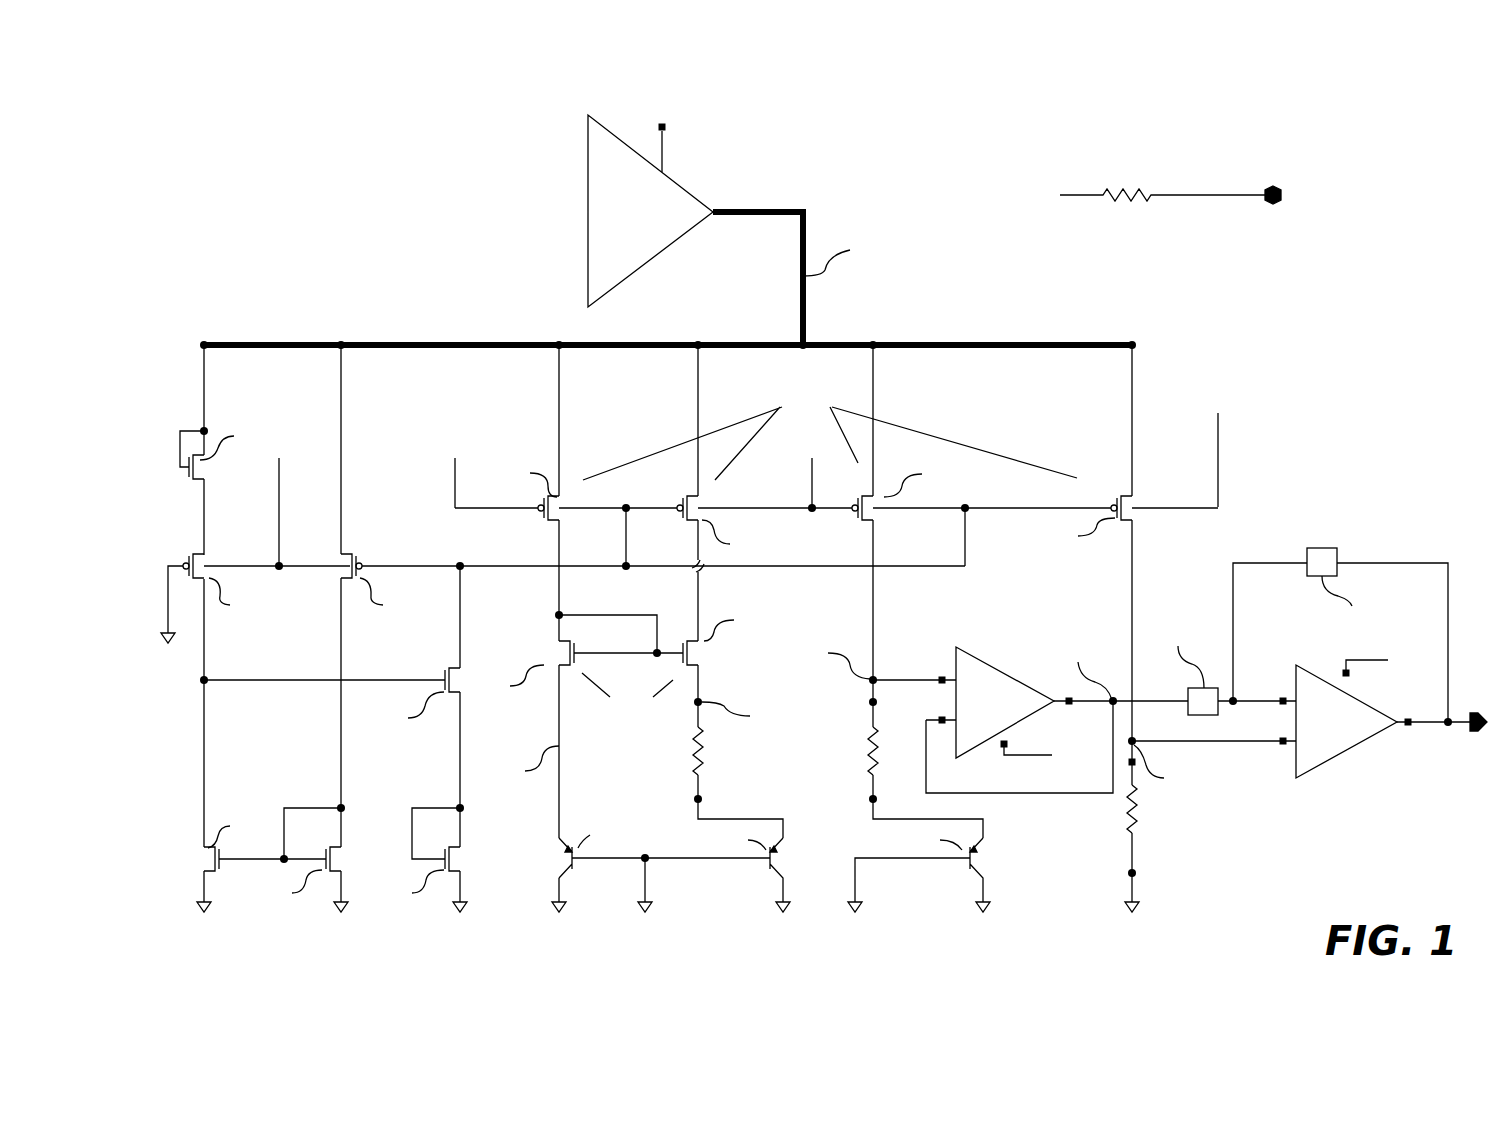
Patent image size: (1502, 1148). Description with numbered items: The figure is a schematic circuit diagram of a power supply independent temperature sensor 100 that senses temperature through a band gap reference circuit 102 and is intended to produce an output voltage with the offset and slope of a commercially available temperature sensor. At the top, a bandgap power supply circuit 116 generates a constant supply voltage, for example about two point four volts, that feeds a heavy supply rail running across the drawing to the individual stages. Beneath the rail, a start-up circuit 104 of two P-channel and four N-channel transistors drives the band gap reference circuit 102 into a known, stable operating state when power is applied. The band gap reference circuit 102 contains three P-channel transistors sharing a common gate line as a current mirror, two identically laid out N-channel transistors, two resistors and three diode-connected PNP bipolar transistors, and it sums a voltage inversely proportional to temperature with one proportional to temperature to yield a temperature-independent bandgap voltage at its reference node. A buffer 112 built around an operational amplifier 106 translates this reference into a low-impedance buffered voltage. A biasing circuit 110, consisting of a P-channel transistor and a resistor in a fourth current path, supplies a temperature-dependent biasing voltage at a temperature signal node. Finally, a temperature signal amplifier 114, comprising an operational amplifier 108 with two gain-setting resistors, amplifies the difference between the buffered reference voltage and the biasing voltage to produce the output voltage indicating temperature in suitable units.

The power supply independent temperature sensor 100 is at (908, 185).
The band gap reference circuit 102 is at (873, 340).
The start-up circuit 104 is at (341, 340).
The operational amplifier 106 is at (1014, 672).
The operational amplifier 108 is at (1338, 757).
The biasing circuit 110 is at (1250, 340).
The buffer 112 is at (1036, 632).
The temperature signal amplifier 114 is at (1350, 830).
The bandgap power supply circuit 116 is at (588, 190).